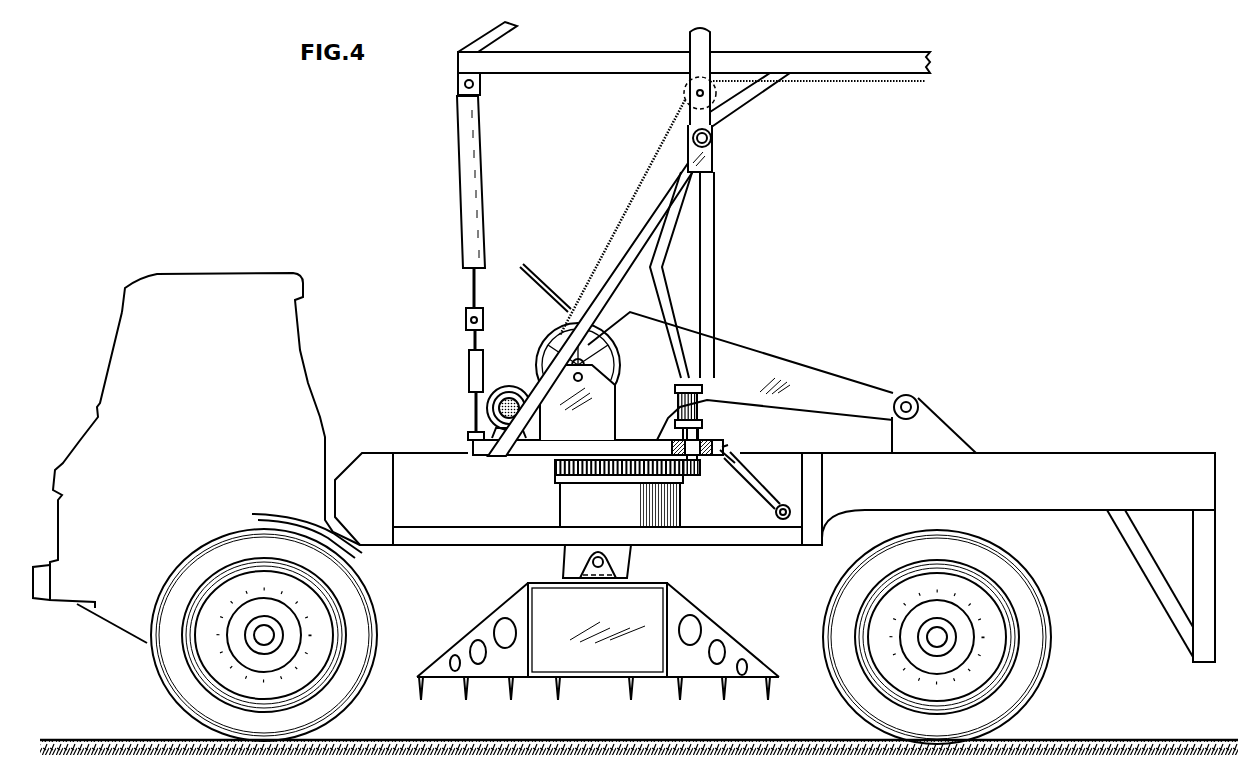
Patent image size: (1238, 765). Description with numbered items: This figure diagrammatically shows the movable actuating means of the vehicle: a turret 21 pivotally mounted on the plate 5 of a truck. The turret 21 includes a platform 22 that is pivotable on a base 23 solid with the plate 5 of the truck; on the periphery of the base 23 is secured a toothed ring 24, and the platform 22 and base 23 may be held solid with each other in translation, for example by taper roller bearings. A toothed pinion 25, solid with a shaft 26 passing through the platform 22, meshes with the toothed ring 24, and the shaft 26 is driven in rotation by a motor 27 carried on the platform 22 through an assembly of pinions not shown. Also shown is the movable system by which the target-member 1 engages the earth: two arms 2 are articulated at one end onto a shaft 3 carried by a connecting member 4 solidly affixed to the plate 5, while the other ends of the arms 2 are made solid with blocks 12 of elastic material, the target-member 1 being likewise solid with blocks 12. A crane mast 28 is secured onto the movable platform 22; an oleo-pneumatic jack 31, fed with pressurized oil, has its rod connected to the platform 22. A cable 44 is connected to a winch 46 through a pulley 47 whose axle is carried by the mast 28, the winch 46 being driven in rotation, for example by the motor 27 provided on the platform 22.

The target-member 1 is at (712, 604).
The arms 2 is at (790, 360).
The shaft 3 is at (915, 396).
The connecting member 4 is at (947, 440).
The plate 5 is at (998, 466).
The blocks 12 is at (568, 556).
The turret 21 is at (722, 431).
The platform 22 is at (513, 450).
The base 23 is at (560, 505).
The toothed ring 24 is at (555, 467).
The toothed pinion 25 is at (690, 478).
The shaft 26 is at (722, 462).
The motor 27 is at (507, 385).
The mast 28 is at (724, 223).
The oleo-pneumatic jack 31 is at (460, 186).
The cable 44 is at (652, 153).
The winch 46 is at (553, 345).
The pulley 47 is at (682, 100).